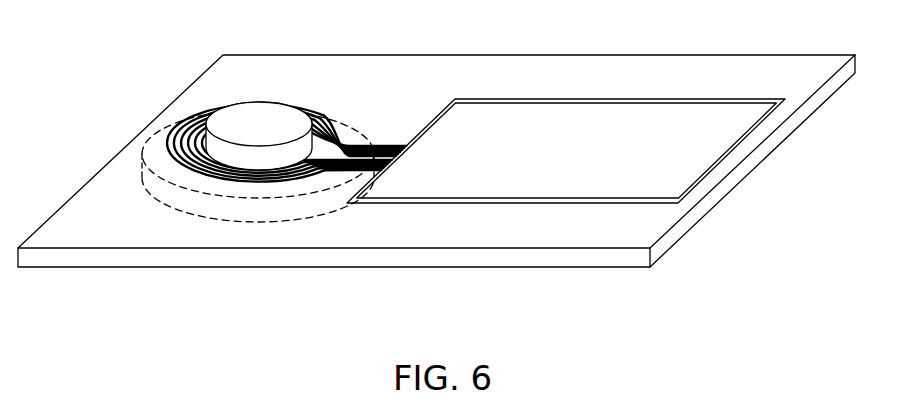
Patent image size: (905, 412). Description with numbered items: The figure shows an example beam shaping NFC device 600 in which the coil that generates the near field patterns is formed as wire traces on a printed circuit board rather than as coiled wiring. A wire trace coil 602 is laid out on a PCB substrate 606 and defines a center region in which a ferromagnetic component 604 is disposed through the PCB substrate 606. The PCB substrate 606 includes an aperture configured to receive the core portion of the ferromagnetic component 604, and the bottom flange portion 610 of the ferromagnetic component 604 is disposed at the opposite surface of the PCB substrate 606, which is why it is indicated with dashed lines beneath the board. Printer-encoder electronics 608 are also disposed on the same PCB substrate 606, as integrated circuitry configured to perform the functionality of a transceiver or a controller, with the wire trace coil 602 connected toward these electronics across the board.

The beam shaping NFC device 600 is at (222, 318).
The wire trace coil 602 is at (178, 125).
The ferromagnetic component 604 is at (257, 110).
The PCB substrate 606 is at (364, 62).
The printer-encoder electronics 608 is at (610, 112).
The bottom flange portion 610 is at (160, 193).